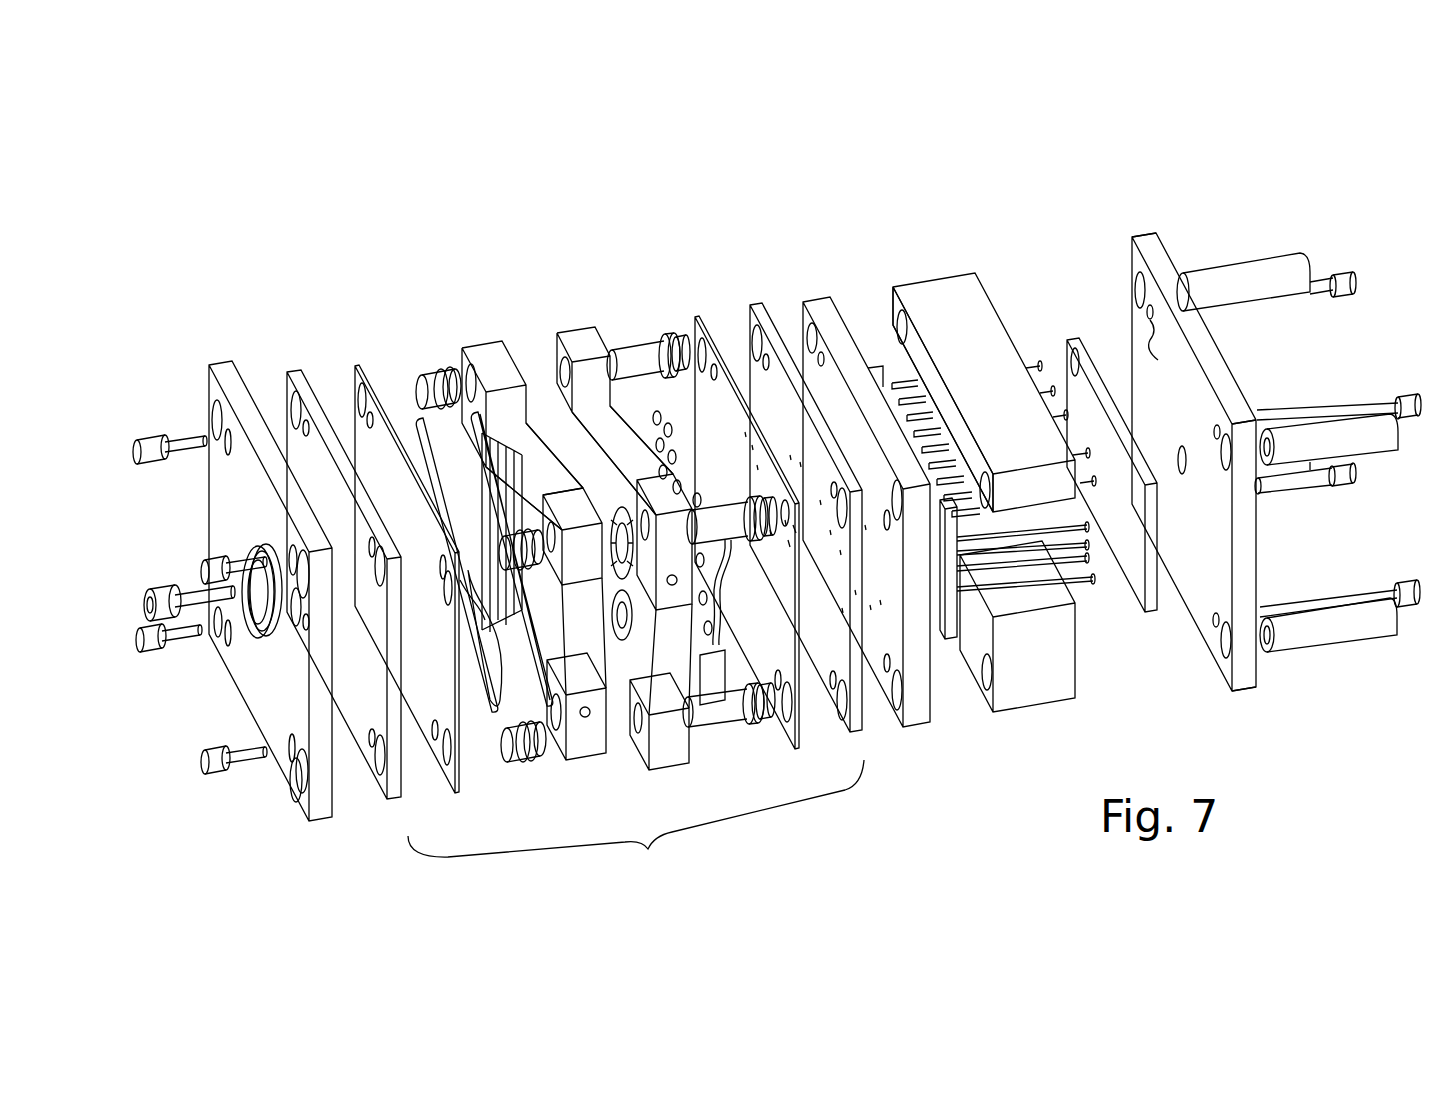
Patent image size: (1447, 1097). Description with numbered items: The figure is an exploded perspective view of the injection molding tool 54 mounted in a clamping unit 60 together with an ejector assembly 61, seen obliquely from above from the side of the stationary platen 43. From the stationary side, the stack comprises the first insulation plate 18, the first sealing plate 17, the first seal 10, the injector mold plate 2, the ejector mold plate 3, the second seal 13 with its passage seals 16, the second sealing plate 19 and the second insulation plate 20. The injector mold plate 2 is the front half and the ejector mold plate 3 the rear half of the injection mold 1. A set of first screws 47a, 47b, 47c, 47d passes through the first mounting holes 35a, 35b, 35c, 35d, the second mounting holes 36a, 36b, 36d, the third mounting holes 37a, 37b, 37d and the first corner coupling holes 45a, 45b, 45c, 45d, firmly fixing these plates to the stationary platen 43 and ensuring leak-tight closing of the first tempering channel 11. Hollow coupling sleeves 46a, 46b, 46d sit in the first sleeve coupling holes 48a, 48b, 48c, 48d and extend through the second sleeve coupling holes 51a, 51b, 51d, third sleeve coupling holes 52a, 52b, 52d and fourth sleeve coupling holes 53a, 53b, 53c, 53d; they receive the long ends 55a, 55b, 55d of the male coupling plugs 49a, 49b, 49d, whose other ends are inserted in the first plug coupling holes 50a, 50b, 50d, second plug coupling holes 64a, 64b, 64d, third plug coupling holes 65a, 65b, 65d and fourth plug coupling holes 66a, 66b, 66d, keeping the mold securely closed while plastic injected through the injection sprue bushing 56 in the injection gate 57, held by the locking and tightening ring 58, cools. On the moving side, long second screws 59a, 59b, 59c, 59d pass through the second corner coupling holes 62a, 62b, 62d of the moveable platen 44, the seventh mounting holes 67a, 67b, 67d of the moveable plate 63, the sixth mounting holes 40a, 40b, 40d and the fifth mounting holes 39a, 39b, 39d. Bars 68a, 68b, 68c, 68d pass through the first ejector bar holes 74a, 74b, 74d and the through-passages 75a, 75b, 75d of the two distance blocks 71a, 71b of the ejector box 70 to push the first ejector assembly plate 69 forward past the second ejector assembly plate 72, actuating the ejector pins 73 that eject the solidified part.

The injection mold 1 is at (520, 340).
The injector mold plate 2 is at (492, 345).
The ejector mold plate 3 is at (600, 335).
The first seal 10 is at (492, 705).
The first tempering channel 11 is at (495, 705).
The second seal 13 is at (722, 700).
The passage seals 16 is at (714, 630).
The first sealing plate 17 is at (358, 363).
The first insulation plate 18 is at (292, 368).
The second sealing plate 19 is at (700, 320).
The second insulation plate 20 is at (768, 310).
The first mounting hole 35a is at (548, 492).
The first mounting hole 35b is at (472, 345).
The first mounting hole 35c is at (495, 620).
The first mounting hole 35d is at (570, 705).
The second mounting hole 36a is at (442, 575).
The second mounting hole 36b is at (372, 415).
The second mounting hole 36d is at (438, 740).
The third mounting hole 37a is at (373, 540).
The third mounting hole 37b is at (308, 424).
The third mounting hole 37d is at (373, 748).
The fifth mounting hole 39a is at (783, 500).
The fifth mounting hole 39b is at (706, 350).
The fifth mounting hole 39d is at (778, 675).
The sixth mounting hole 40a is at (840, 503).
The sixth mounting hole 40b is at (760, 340).
The sixth mounting hole 40d is at (834, 690).
The stationary platen 43 is at (212, 362).
The moveable platen 44 is at (1157, 245).
The first corner coupling hole 45a is at (295, 548).
The first corner coupling hole 45b is at (230, 455).
The first corner coupling hole 45c is at (232, 643).
The first corner coupling hole 45d is at (292, 733).
The hollow coupling sleeve 46a is at (522, 565).
The hollow coupling sleeve 46b is at (438, 380).
The hollow coupling sleeve 46d is at (536, 760).
The first screw 47a is at (222, 570).
The first screw 47b is at (165, 447).
The first screw 47c is at (165, 645).
The first screw 47d is at (250, 755).
The first sleeve coupling hole 48a is at (556, 530).
The first sleeve coupling hole 48b is at (462, 352).
The first sleeve coupling hole 48c is at (480, 600).
The first sleeve coupling hole 48d is at (585, 720).
The male coupling plug 49a is at (757, 541).
The male coupling plug 49b is at (668, 348).
The male coupling plug 49d is at (753, 728).
The first plug coupling hole 50a is at (660, 512).
The first plug coupling hole 50b is at (565, 345).
The first plug coupling hole 50d is at (638, 752).
The second sleeve coupling hole 51a is at (448, 575).
The second sleeve coupling hole 51b is at (360, 395).
The second sleeve coupling hole 51d is at (447, 728).
The third sleeve coupling hole 52a is at (383, 588).
The third sleeve coupling hole 52b is at (294, 405).
The third sleeve coupling hole 52d is at (381, 735).
The fourth sleeve coupling hole 53a is at (303, 598).
The fourth sleeve coupling hole 53b is at (215, 415).
The fourth sleeve coupling hole 53c is at (218, 636).
The fourth sleeve coupling hole 53d is at (302, 790).
The injection molding tool 54 is at (636, 824).
The long end 55a is at (720, 520).
The long end 55b is at (640, 360).
The long end 55d is at (740, 728).
The injection sprue bushing 56 is at (158, 595).
The injection gate 57 is at (278, 590).
The locking and tightening ring 58 is at (272, 545).
The long second screw 59a is at (1400, 397).
The long second screw 59b is at (1283, 297).
The long second screw 59c is at (1342, 480).
The long second screw 59d is at (1410, 605).
The clamping unit 60 is at (493, 148).
The ejector assembly 61 is at (948, 215).
The second corner coupling hole 62a is at (1220, 430).
The second corner coupling hole 62b is at (1152, 315).
The second corner coupling hole 62d is at (1215, 625).
The moveable plate 63 is at (918, 720).
The second plug coupling hole 64a is at (795, 540).
The second plug coupling hole 64b is at (714, 380).
The second plug coupling hole 64d is at (787, 722).
The third plug coupling hole 65a is at (836, 488).
The third plug coupling hole 65b is at (768, 368).
The third plug coupling hole 65d is at (842, 680).
The fourth plug coupling hole 66a is at (897, 495).
The fourth plug coupling hole 66b is at (815, 325).
The fourth plug coupling hole 66d is at (897, 710).
The seventh mounting hole 67a is at (889, 522).
The seventh mounting hole 67b is at (824, 352).
The seventh mounting hole 67d is at (887, 655).
The bar 68a is at (1330, 435).
The bar 68b is at (1212, 280).
The bar 68c is at (1293, 470).
The bar 68d is at (1325, 630).
The first ejector assembly plate 69 is at (1078, 335).
The ejector box 70 is at (987, 307).
The distance block 71a is at (938, 330).
The distance block 71b is at (1045, 690).
The second ejector assembly plate 72 is at (948, 640).
The ejector pins 73 is at (1065, 560).
The first ejector bar hole 74a is at (1228, 470).
The first ejector bar hole 74b is at (1152, 245).
The first ejector bar hole 74d is at (1228, 665).
The through-passage 75a is at (988, 482).
The through-passage 75b is at (906, 315).
The through-passage 75d is at (987, 655).